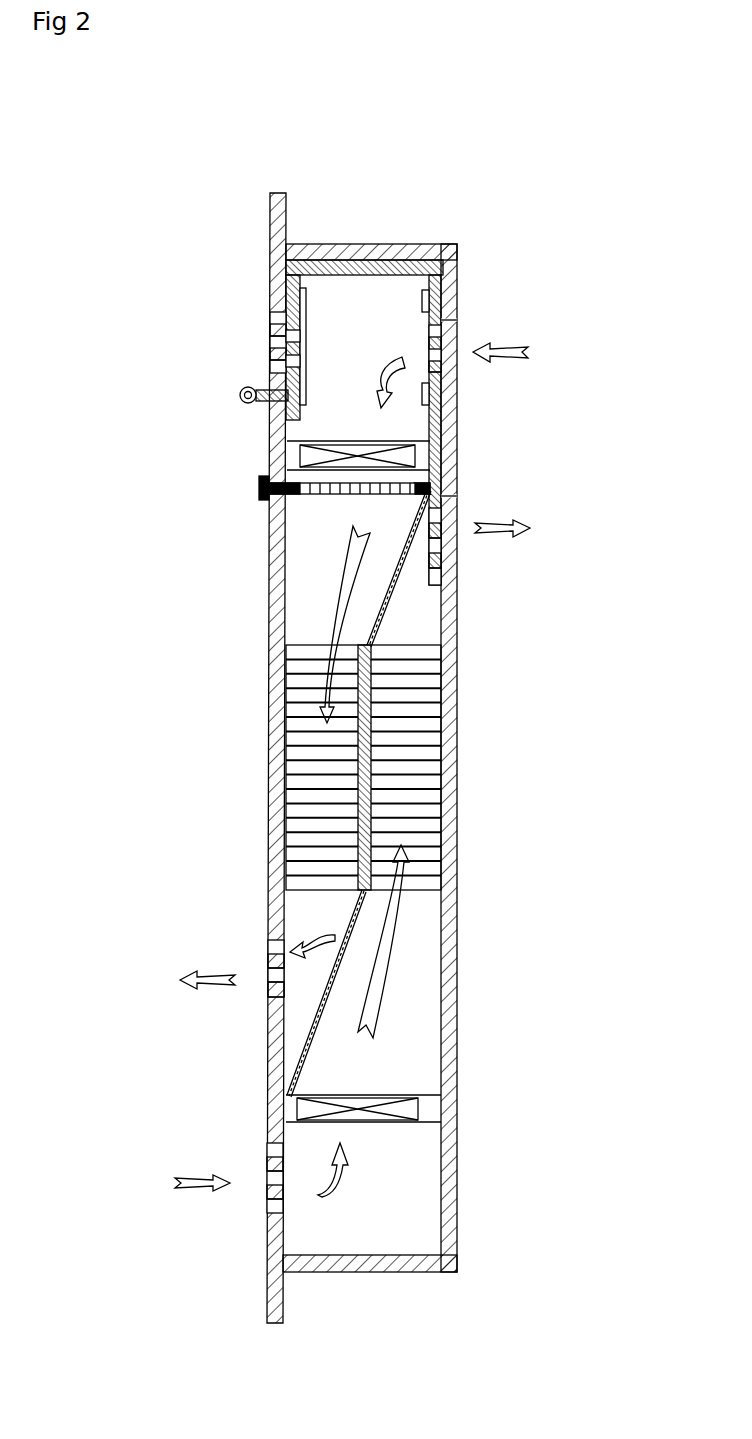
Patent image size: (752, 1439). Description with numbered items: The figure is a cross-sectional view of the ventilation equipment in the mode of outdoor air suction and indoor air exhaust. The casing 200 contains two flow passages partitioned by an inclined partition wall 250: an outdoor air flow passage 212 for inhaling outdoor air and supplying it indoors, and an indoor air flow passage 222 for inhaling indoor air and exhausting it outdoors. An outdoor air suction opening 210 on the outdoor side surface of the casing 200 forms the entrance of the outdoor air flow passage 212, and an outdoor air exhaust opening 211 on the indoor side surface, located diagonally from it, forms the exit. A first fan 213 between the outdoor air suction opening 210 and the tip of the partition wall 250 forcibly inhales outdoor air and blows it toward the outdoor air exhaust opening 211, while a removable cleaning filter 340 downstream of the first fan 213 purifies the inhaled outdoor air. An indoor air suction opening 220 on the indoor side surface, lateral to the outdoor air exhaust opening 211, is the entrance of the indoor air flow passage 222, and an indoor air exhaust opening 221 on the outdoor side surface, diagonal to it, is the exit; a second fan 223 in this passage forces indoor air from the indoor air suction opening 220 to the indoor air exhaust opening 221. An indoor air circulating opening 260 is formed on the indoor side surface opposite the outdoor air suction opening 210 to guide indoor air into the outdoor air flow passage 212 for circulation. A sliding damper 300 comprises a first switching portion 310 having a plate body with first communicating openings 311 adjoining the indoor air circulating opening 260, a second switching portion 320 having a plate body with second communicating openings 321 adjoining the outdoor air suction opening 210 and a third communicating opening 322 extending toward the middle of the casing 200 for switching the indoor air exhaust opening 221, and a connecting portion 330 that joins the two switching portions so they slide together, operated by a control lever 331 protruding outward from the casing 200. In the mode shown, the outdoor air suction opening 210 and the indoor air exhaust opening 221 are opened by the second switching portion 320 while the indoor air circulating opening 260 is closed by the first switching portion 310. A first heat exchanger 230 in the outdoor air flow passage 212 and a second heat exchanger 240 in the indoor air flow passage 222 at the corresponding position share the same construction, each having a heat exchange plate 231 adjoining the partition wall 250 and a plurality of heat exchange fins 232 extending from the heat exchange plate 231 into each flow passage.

The casing 200 is at (450, 915).
The outdoor air suction opening 210 is at (452, 323).
The outdoor air exhaust opening 211 is at (270, 948).
The outdoor air flow passage 212 is at (310, 573).
The first fan 213 is at (450, 455).
The indoor air suction opening 220 is at (272, 1190).
The indoor air exhaust opening 221 is at (457, 562).
The indoor air flow passage 222 is at (410, 991).
The second fan 223 is at (270, 1100).
The first heat exchanger 230 is at (325, 767).
The heat exchange plate 231 is at (300, 800).
The heat exchange fins 232 is at (302, 765).
The second heat exchanger 240 is at (428, 818).
The partition wall 250 is at (380, 600).
The indoor air circulating opening 260 is at (272, 346).
The damper 300 is at (368, 338).
The first switching portion 310 is at (310, 275).
The first communicating openings 311 is at (272, 312).
The second switching portion 320 is at (422, 275).
The second communicating openings 321 is at (445, 297).
The third communicating opening 322 is at (457, 490).
The connecting portion 330 is at (365, 275).
The control lever 331 is at (240, 400).
The cleaning filter 340 is at (260, 490).